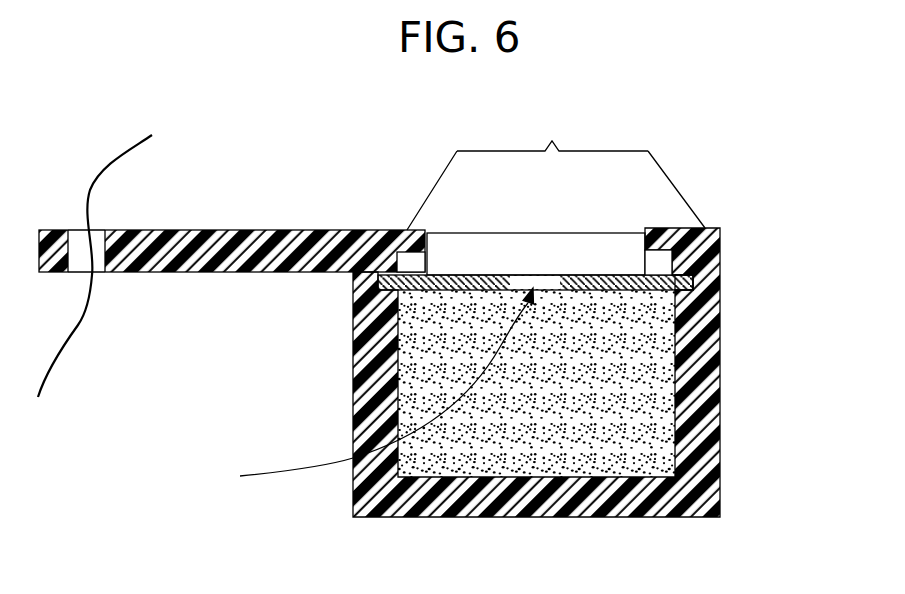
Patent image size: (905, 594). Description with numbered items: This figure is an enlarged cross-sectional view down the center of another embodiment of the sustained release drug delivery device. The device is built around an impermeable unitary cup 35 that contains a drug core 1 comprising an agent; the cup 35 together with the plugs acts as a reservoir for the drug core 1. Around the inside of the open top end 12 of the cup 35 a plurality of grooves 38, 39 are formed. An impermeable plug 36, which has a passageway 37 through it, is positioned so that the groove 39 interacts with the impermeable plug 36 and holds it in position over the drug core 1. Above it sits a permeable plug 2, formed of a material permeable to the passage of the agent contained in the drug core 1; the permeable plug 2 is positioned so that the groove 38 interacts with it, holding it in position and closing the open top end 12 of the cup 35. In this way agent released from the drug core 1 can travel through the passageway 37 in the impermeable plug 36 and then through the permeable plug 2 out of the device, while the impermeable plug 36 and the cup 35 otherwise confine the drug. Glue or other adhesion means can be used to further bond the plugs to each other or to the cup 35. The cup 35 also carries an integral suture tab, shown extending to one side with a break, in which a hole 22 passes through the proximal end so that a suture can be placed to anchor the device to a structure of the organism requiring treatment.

The drug core 1 is at (640, 420).
The permeable plug 2 is at (524, 234).
The open top end 12 is at (556, 168).
The hole 22 is at (80, 314).
The impermeable unitary cup 35 is at (720, 425).
The impermeable plug 36 is at (708, 283).
The passageway 37 is at (368, 390).
The groove 38 is at (420, 259).
The groove 39 is at (722, 291).